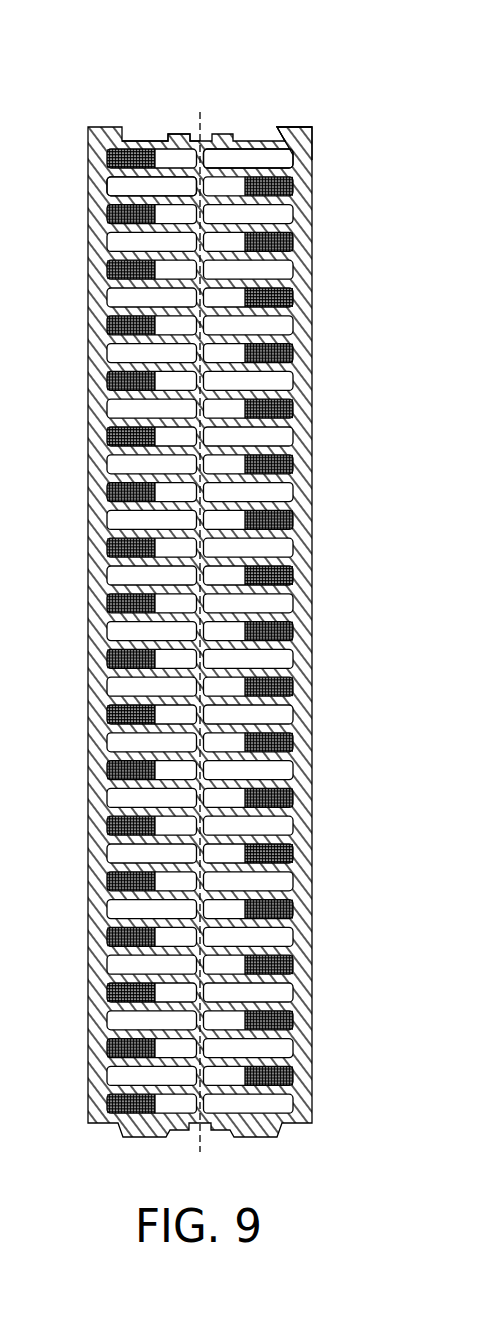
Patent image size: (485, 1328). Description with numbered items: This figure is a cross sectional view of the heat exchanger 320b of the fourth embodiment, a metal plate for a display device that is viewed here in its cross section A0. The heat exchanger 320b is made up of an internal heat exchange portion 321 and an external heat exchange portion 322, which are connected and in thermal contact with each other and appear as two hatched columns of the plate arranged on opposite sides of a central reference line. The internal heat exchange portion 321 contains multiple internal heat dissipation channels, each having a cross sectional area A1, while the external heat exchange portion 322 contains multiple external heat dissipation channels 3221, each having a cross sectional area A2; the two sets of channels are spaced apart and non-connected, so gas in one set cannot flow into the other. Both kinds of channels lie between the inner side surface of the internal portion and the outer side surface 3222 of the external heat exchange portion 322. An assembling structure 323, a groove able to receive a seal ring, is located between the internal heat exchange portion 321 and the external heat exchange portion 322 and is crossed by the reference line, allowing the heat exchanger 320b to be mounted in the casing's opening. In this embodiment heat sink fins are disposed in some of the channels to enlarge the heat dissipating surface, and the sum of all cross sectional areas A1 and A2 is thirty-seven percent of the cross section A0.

The heat exchanger 320b is at (224, 36).
The internal heat exchange portion 321 is at (100, 304).
The external heat exchange portion 322 is at (300, 303).
The external heat dissipation channel 3221 is at (162, 147).
The outer side surface 3222 is at (294, 155).
The assembling structure 323 is at (118, 157).
The cross section A0 is at (297, 137).
The cross sectional area A1 is at (130, 186).
The cross sectional area A2 is at (258, 152).